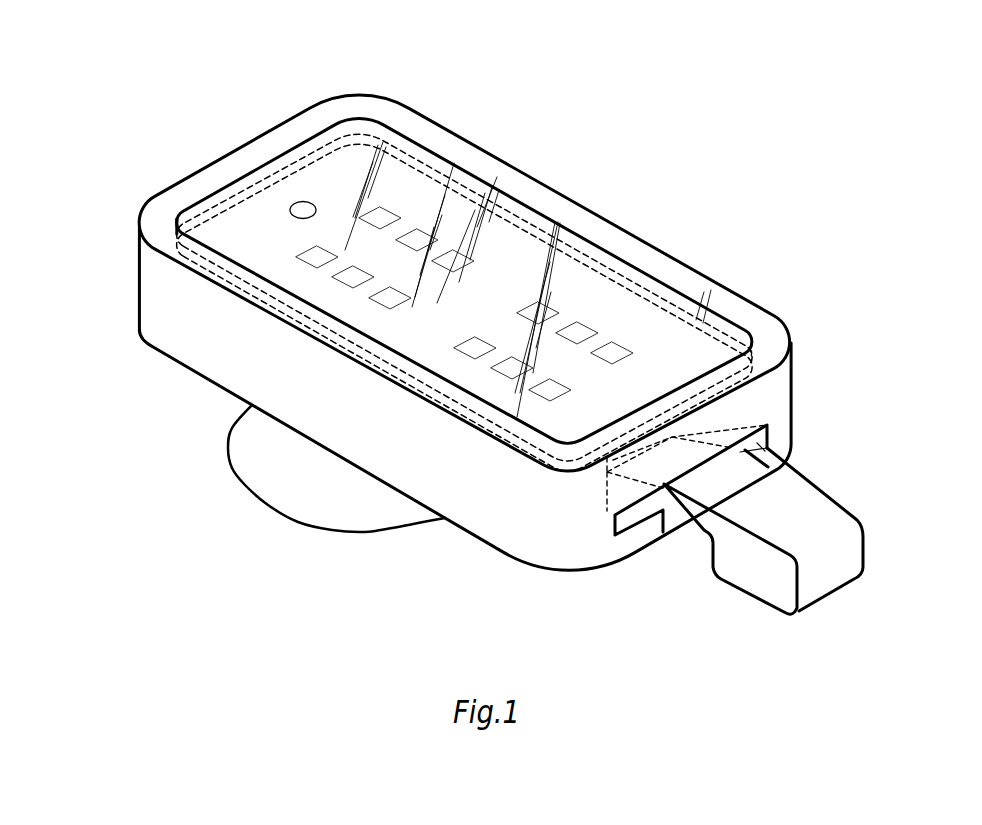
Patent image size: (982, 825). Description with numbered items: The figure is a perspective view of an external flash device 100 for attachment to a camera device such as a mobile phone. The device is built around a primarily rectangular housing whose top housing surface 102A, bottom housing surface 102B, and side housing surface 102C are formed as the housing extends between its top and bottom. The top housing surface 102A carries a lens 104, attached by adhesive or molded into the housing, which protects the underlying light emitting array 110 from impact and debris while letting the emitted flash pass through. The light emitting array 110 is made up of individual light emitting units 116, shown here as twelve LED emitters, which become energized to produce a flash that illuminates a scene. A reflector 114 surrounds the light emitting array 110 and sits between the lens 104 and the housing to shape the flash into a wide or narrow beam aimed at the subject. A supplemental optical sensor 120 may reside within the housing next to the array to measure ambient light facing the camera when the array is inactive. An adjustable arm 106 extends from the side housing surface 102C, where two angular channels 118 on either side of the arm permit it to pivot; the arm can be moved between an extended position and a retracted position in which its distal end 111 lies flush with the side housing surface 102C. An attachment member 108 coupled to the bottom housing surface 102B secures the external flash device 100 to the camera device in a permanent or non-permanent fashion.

The external flash device 100 is at (465, 400).
The top housing surface 102A is at (175, 200).
The bottom housing surface 102B is at (173, 362).
The side housing surface 102C is at (147, 285).
The lens 104 is at (437, 150).
The adjustable arm 106 is at (780, 600).
The attachment member 108 is at (250, 444).
The light emitting array 110 is at (534, 302).
The distal end 111 is at (822, 580).
The reflector 114 is at (528, 233).
The light emitting unit 116 is at (586, 326).
The channels 118 is at (770, 467).
The supplemental optical sensor 120 is at (302, 206).